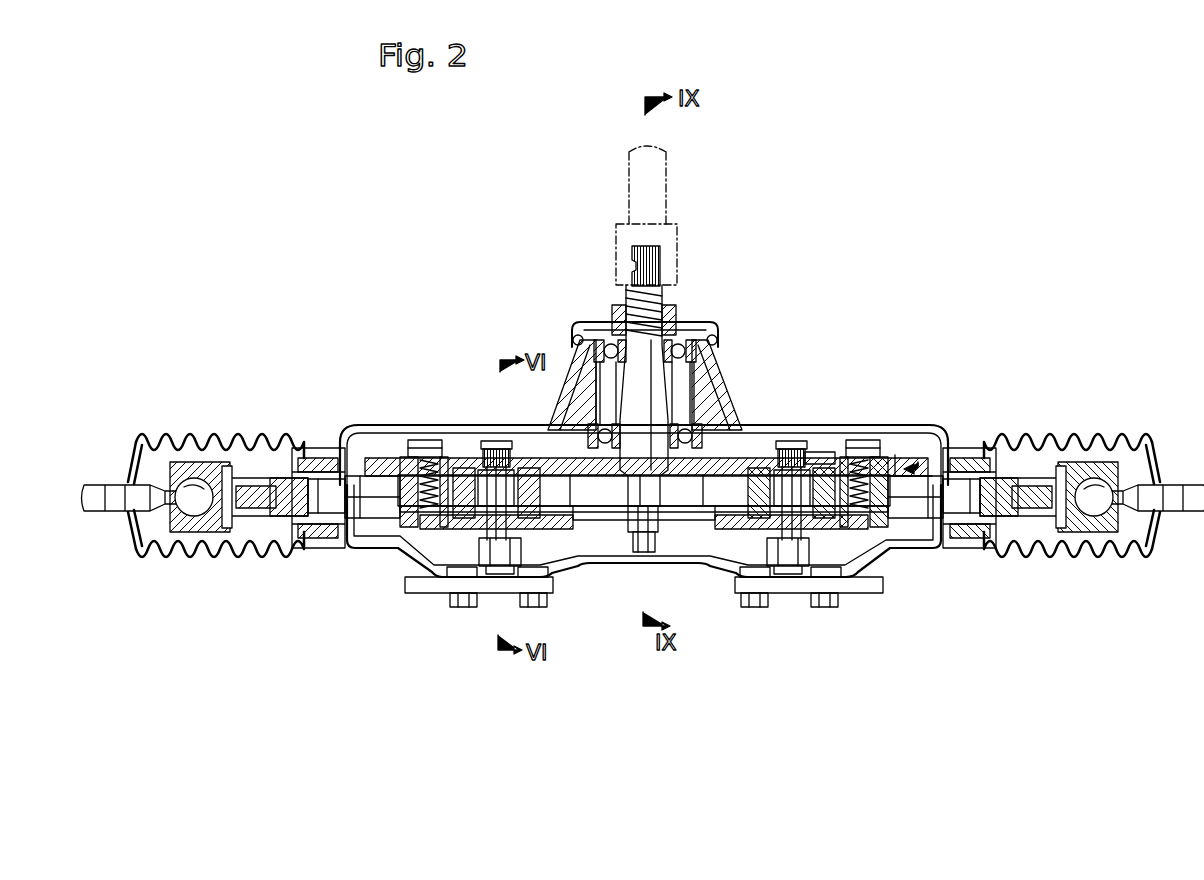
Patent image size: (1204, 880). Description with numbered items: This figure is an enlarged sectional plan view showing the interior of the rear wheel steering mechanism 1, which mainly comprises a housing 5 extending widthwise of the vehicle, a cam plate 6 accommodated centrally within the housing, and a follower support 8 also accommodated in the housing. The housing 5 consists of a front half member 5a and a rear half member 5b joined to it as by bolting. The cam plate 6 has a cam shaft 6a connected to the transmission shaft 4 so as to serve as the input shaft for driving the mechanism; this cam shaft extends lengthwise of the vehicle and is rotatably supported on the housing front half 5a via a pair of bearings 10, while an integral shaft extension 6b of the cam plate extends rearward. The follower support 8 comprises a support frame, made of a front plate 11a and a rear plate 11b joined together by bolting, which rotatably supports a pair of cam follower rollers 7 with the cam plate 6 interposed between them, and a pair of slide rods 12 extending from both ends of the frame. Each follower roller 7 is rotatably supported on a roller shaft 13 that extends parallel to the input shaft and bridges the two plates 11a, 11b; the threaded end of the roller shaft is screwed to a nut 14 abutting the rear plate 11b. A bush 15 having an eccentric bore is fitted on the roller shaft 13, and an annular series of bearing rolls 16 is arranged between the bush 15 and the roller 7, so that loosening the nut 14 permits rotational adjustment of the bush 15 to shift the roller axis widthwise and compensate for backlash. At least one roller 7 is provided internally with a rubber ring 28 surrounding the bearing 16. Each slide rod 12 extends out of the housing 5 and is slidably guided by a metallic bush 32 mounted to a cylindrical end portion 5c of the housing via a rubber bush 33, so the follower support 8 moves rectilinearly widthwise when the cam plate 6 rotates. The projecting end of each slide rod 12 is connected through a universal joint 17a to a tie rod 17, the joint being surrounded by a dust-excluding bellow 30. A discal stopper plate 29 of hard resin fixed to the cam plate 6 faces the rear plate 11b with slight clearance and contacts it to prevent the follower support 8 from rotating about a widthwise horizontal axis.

The rear wheel steering mechanism 1 is at (728, 313).
The transmission shaft 4 is at (667, 183).
The housing 5 is at (400, 425).
The front half member 5a is at (458, 462).
The rear half member 5b is at (602, 572).
The cylindrical end portion 5c is at (330, 455).
The cam plate 6 is at (668, 420).
The cam shaft 6a is at (690, 385).
The shaft extension 6b is at (660, 532).
The cam follower rollers 7 is at (432, 445).
The follower support 8 is at (888, 462).
The bearings 10 is at (600, 345).
The front plate 11a is at (533, 462).
The rear plate 11b is at (722, 500).
The slide rods 12 is at (372, 505).
The roller shaft 13 is at (482, 460).
The nut 14 is at (456, 560).
The bush 15 is at (500, 548).
The bearing rolls 16 is at (472, 468).
The tie rod 17 is at (95, 510).
The universal joint 17a is at (192, 520).
The rubber ring 28 is at (822, 462).
The stopper plate 29 is at (600, 572).
The bellow 30 is at (215, 440).
The metallic bush 32 is at (320, 465).
The rubber bush 33 is at (322, 538).